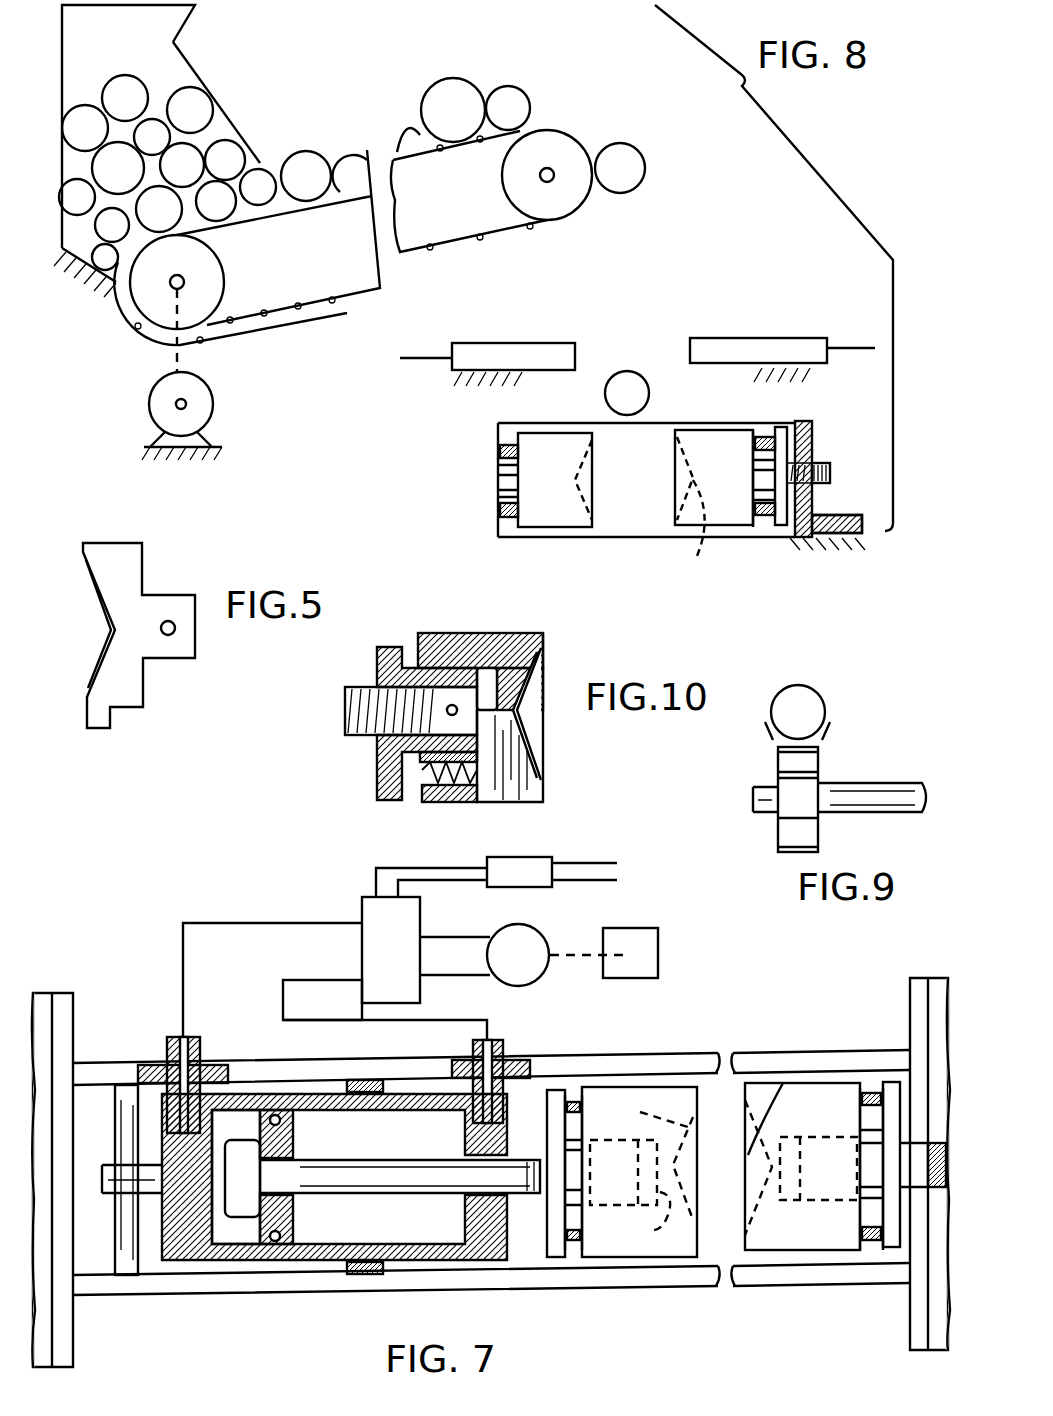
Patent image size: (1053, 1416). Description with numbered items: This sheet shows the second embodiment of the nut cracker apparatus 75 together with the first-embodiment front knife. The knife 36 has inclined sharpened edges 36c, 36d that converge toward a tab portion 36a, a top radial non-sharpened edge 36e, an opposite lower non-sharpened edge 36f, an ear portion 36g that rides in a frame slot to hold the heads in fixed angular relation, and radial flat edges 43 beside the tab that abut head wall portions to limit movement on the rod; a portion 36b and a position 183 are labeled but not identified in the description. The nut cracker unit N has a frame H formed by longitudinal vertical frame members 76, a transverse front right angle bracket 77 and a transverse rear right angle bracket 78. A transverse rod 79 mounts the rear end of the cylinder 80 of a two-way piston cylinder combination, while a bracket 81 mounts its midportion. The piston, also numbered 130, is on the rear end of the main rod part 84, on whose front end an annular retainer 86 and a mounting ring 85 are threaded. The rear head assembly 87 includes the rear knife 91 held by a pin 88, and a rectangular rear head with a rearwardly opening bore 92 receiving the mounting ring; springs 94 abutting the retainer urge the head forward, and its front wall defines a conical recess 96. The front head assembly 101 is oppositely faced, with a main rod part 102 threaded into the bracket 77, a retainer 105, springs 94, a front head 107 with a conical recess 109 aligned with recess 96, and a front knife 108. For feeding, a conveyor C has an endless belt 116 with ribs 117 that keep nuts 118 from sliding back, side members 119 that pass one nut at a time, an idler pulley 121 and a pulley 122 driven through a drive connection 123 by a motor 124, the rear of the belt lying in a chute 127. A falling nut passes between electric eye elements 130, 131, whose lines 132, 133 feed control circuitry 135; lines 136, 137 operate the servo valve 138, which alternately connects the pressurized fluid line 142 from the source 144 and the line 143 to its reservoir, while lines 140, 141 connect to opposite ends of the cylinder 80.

In FIG. 5, the knife 36 is at (118, 545).
In FIG. 5, the tab portion 36a is at (182, 608).
In FIG. 5, the lever lower portion 36b is at (125, 693).
In FIG. 5, the inclined sharpened edge 36c is at (95, 600).
In FIG. 5, the inclined sharpened edge 36d is at (103, 668).
In FIG. 5, the top radial non-sharpened edge 36e is at (90, 543).
In FIG. 5, the lower non-sharpened edge 36f is at (82, 710).
In FIG. 5, the ear portion 36g is at (97, 725).
In FIG. 5, the radial flat edges 43 is at (145, 570).
In FIG. 8, the nut cracker apparatus 75 is at (252, 130).
In FIG. 8, the longitudinal vertical frame members 76 is at (615, 443).
In FIG. 7, the longitudinal vertical frame members 76 is at (740, 1320).
In FIG. 8, the transverse front right angle bracket 77 is at (813, 437).
In FIG. 7, the transverse front right angle bracket 77 is at (910, 1010).
In FIG. 7, the transverse rear right angle bracket 78 is at (63, 1352).
In FIG. 7, the transverse rod 79 is at (128, 1262).
In FIG. 7, the cylinder 80 is at (237, 1255).
In FIG. 7, the bracket 81 is at (347, 1300).
In FIG. 10, the main rod part 84 is at (380, 735).
In FIG. 7, the main rod part 84 is at (410, 1170).
In FIG. 8, the mounting ring 85 is at (505, 486).
In FIG. 7, the annular retainer 86 is at (556, 1252).
In FIG. 10, the rear head assembly 87 is at (556, 668).
In FIG. 7, the rear head assembly 87 is at (656, 1090).
In FIG. 10, the pin 88 is at (458, 714).
In FIG. 8, the rear knife 91 is at (565, 517).
In FIG. 10, the rear knife 91 is at (520, 762).
In FIG. 7, the rear knife 91 is at (675, 1248).
In FIG. 10, the rearwardly opening bore 92 is at (487, 650).
In FIG. 7, the rearwardly opening bore 92 is at (630, 1192).
In FIG. 10, the springs 94 is at (442, 797).
In FIG. 7, the springs 94 is at (575, 1248).
In FIG. 10, the conical recess 96 is at (535, 695).
In FIG. 7, the conical recess 96 is at (649, 1160).
In FIG. 8, the front head assembly 101 is at (712, 455).
In FIG. 7, the main rod part 102 is at (905, 1158).
In FIG. 8, the retainer 105 is at (782, 526).
In FIG. 7, the retainer 105 is at (893, 1082).
In FIG. 8, the front head 107 is at (710, 478).
In FIG. 7, the front head 107 is at (820, 1237).
In FIG. 7, the front knife 108 is at (758, 1090).
In FIG. 8, the conical recess 109 is at (686, 530).
In FIG. 8, the endless conveyor belt 116 is at (417, 257).
In FIG. 9, the endless conveyor belt 116 is at (807, 788).
In FIG. 8, the ribs 117 is at (490, 240).
In FIG. 9, the ribs 117 is at (800, 826).
In FIG. 8, the nuts 118 is at (646, 163).
In FIG. 9, the nuts 118 is at (800, 700).
In FIG. 9, the side members 119 is at (828, 738).
In FIG. 8, the idler pulley 121 is at (515, 187).
In FIG. 8, the pulley 122 is at (212, 277).
In FIG. 8, the drive connection 123 is at (187, 361).
In FIG. 8, the motor 124 is at (150, 408).
In FIG. 8, the chute 127 is at (180, 72).
In FIG. 8, the electric eye element 130 is at (540, 346).
In FIG. 7, the electric eye element 130 is at (315, 1220).
In FIG. 8, the electric eye element 131 is at (743, 348).
In FIG. 8, the line 132 is at (423, 362).
In FIG. 7, the line 132 is at (597, 862).
In FIG. 7, the line 133 is at (604, 880).
In FIG. 7, the control circuitry 135 is at (515, 880).
In FIG. 7, the line 136 is at (375, 876).
In FIG. 7, the line 137 is at (460, 882).
In FIG. 8, the electrically operated servo valve 138 is at (103, 296).
In FIG. 7, the electrically operated servo valve 138 is at (378, 925).
In FIG. 7, the line 140 is at (215, 923).
In FIG. 7, the line 141 is at (283, 997).
In FIG. 7, the pressurized fluid line 142 is at (448, 937).
In FIG. 7, the line 143 is at (453, 980).
In FIG. 7, the pressurized fluid source 144 is at (528, 975).
In FIG. 8, the stop position 183 is at (868, 342).
In FIG. 8, the conveyor C is at (565, 147).
In FIG. 7, the nut cracker unit N is at (75, 1010).
In FIG. 7, the frame H is at (912, 1335).